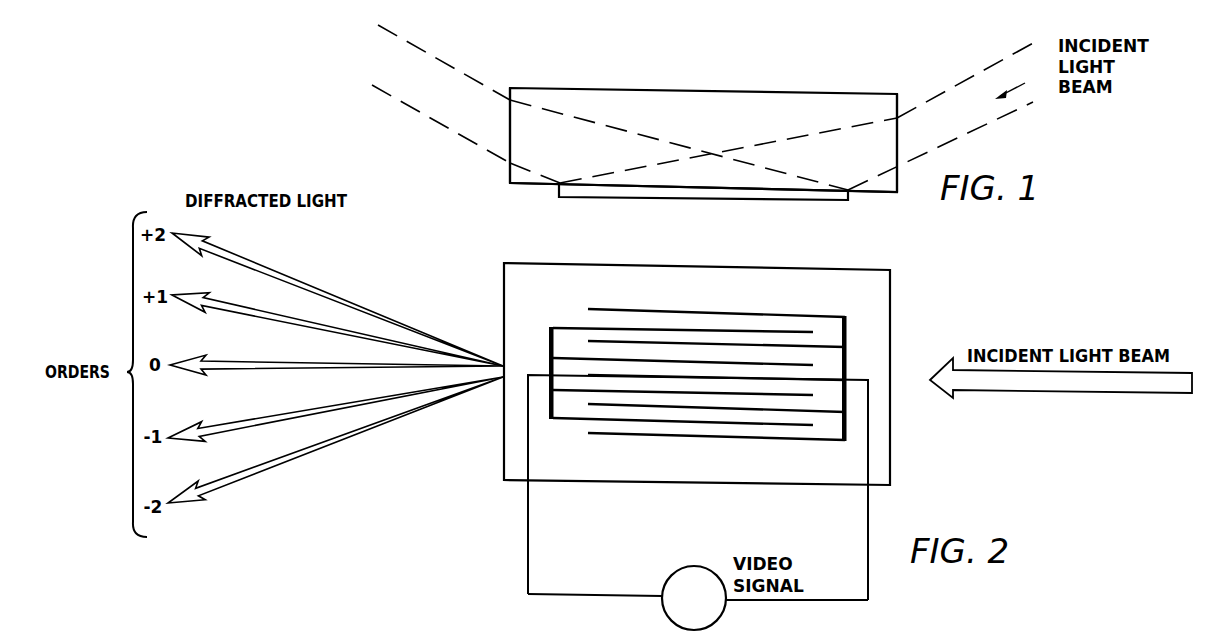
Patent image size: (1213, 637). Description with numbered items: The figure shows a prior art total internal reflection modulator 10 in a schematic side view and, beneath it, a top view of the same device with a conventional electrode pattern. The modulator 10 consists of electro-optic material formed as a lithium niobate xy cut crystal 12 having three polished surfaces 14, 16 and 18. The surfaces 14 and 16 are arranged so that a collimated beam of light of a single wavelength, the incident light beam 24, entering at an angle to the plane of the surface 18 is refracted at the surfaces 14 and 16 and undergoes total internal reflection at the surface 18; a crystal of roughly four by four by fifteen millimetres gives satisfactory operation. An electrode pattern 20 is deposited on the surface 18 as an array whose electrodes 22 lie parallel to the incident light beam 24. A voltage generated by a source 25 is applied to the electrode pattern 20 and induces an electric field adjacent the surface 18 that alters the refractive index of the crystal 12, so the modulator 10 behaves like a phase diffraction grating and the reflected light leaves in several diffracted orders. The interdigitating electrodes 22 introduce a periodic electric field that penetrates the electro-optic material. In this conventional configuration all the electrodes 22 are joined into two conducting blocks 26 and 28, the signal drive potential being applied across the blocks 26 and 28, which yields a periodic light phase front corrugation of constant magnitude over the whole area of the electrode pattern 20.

In FIG. 1, the TIR modulator 10 is at (703, 120).
In FIG. 1, the crystal 12 is at (640, 100).
In FIG. 1, the polished surface 14 is at (510, 140).
In FIG. 1, the polished surface 16 is at (897, 155).
In FIG. 1, the polished surface 18 is at (537, 188).
In FIG. 1, the electrode pattern 20 is at (672, 198).
In FIG. 2, the electrode pattern 20 is at (826, 308).
In FIG. 2, the electrodes 22 is at (675, 330).
In FIG. 1, the incident light beam 24 is at (990, 111).
In FIG. 2, the incident light beam 24 is at (1027, 394).
In FIG. 2, the source 25 is at (667, 585).
In FIG. 2, the conducting block 26 is at (549, 338).
In FIG. 2, the conducting block 28 is at (846, 358).